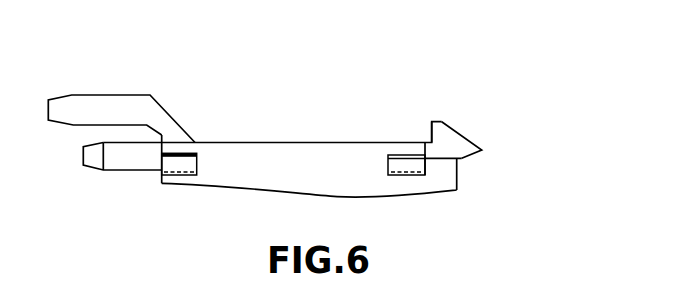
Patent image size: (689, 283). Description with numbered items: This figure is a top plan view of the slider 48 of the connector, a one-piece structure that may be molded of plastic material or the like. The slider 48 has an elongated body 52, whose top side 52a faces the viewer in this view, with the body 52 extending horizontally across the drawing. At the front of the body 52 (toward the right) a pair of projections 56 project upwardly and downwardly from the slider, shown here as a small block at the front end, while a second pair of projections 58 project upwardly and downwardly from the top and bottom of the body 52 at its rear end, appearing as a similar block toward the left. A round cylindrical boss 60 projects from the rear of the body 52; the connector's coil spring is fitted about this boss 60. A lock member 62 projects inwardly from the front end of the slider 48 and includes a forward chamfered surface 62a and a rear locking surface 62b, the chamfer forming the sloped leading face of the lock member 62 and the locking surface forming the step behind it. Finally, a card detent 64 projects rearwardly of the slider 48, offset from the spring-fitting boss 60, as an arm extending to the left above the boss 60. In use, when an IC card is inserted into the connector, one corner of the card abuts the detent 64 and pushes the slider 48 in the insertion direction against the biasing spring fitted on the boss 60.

The slider 48 is at (283, 199).
The elongated body 52 is at (275, 142).
The top side 52a is at (307, 157).
The projections 56 is at (403, 163).
The projections 58 is at (174, 168).
The round cylindrical boss 60 is at (138, 163).
The lock member 62 is at (447, 140).
The forward chamfered surface 62a is at (472, 138).
The rear locking surface 62b is at (427, 130).
The card detent 64 is at (98, 105).